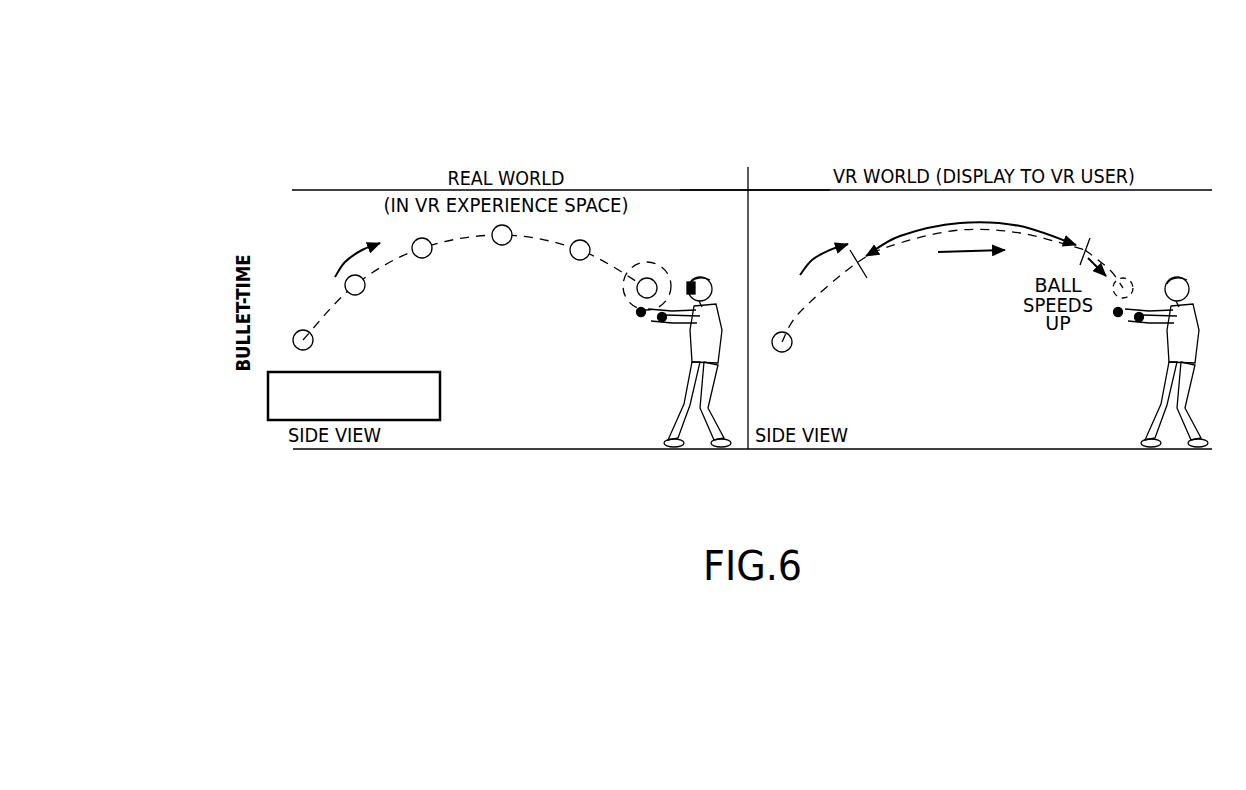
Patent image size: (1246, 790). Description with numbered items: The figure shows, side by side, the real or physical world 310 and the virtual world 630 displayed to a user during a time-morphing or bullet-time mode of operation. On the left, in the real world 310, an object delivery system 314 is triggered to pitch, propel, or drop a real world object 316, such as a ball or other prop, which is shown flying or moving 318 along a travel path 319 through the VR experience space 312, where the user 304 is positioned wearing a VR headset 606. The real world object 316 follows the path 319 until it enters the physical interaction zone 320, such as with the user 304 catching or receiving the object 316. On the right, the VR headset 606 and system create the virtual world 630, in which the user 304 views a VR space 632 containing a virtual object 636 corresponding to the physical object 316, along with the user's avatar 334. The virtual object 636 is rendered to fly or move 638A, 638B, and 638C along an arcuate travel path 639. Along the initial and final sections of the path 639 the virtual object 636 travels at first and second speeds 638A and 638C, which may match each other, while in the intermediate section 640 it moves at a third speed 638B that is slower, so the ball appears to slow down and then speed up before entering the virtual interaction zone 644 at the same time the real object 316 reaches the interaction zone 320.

The real/physical world 310 is at (436, 128).
The VR experience space 312 is at (692, 212).
The object delivery system 314 is at (440, 403).
The real world object 316 is at (313, 340).
The movement of real world object 318 is at (344, 262).
The travel path 319 is at (390, 263).
The physical interaction zone 320 is at (627, 300).
The user 304 is at (688, 377).
The VR headset 606 is at (697, 284).
The virtual world 630 is at (1002, 106).
The VR space 632 is at (815, 207).
The virtual object 636 is at (791, 347).
The first speed/velocity 638A is at (812, 262).
The third speed/velocity 638B is at (968, 256).
The second speed/velocity 638C is at (1101, 263).
The travel path 639 is at (836, 304).
The intermediate section 640 is at (975, 228).
The virtual interaction zone/point 644 is at (1110, 300).
The avatar 334 is at (1123, 379).